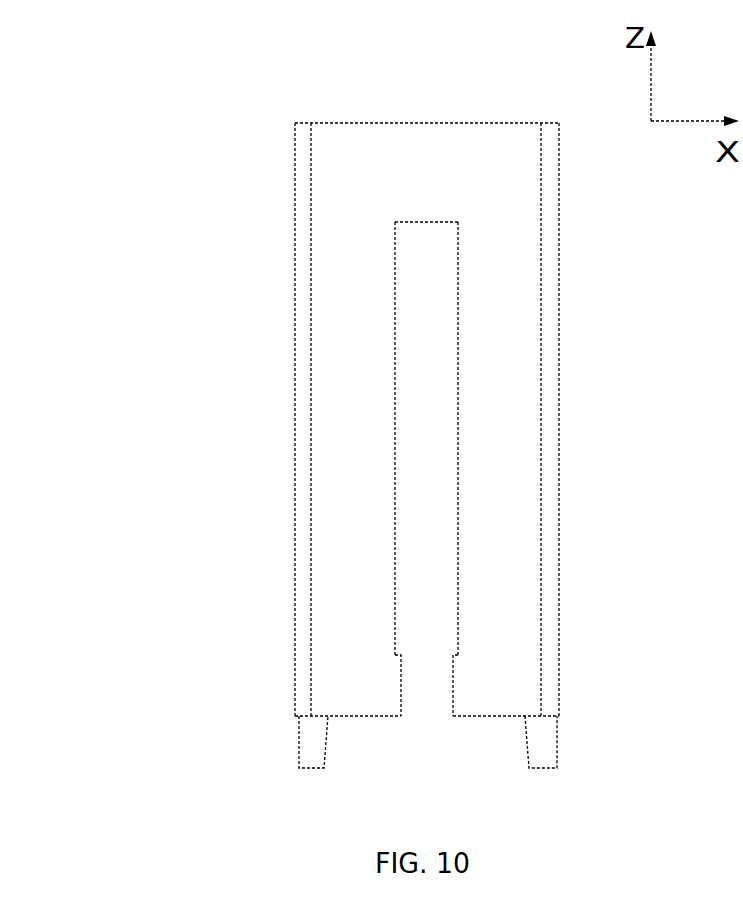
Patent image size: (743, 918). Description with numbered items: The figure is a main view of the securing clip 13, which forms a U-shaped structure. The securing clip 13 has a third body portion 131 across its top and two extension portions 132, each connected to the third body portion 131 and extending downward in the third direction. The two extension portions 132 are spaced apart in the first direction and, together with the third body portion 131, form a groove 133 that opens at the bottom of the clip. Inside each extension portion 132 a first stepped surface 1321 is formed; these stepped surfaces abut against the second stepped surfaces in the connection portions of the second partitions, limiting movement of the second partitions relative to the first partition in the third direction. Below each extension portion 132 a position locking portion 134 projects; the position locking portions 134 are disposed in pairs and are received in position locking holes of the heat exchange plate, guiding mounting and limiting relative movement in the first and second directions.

The securing clip 13 is at (148, 130).
The third body portion 131 is at (428, 152).
The extension portion 132 is at (338, 408).
The first stepped surface 1321 is at (396, 655).
The groove 133 is at (431, 693).
The position locking portion 134 is at (308, 742).